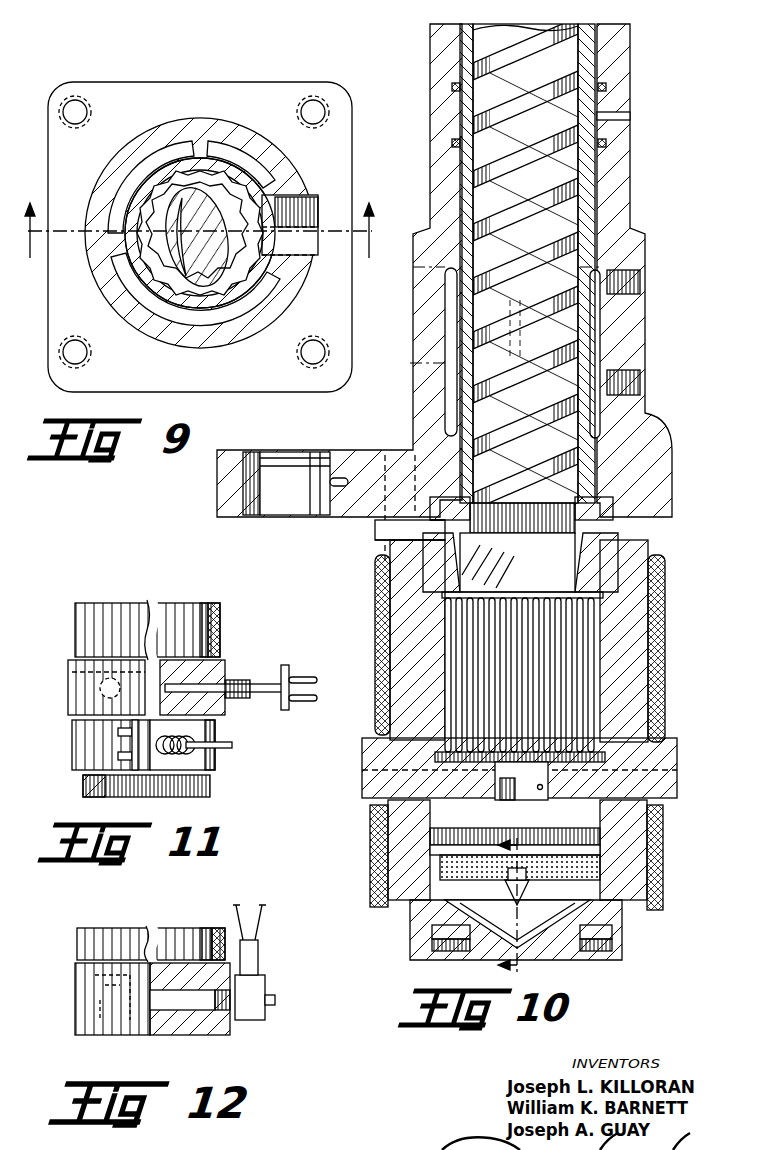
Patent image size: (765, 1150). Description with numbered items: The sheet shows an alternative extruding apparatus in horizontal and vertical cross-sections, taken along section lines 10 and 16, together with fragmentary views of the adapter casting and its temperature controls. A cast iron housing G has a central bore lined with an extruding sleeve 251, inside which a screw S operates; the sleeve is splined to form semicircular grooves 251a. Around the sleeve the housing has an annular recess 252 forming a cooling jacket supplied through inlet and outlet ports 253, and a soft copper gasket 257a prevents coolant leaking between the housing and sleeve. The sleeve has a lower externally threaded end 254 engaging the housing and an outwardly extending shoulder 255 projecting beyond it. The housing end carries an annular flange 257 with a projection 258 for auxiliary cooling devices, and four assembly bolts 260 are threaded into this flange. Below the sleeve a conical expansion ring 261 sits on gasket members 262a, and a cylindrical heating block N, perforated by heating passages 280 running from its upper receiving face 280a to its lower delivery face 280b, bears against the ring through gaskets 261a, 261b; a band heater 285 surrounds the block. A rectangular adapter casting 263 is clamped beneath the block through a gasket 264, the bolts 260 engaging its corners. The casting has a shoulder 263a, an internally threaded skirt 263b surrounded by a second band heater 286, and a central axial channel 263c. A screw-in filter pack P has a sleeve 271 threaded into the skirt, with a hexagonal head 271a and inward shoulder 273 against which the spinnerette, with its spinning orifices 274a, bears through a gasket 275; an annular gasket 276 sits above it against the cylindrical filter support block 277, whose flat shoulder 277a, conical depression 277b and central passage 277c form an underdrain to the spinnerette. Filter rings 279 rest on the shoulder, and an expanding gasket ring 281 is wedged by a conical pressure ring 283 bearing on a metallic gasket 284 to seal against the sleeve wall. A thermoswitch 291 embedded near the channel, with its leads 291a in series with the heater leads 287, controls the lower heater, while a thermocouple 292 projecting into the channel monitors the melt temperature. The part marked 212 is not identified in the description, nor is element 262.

In FIG. 9, the section line 10— 10 is at (202, 243).
In FIG. 10, the section line 16— 16 is at (527, 913).
In FIG. 9, the screw rotor 212 is at (140, 290).
In FIG. 10, the screw rotor 212 is at (522, 158).
In FIG. 10, the extruding sleeve 251 is at (612, 228).
In FIG. 9, the grooves 251a is at (222, 165).
In FIG. 10, the grooves 251a is at (640, 413).
In FIG. 9, the annular recess 252 is at (128, 175).
In FIG. 10, the annular recess 252 is at (440, 368).
In FIG. 10, the inlet and outlet ports 253 is at (640, 285).
In FIG. 10, the lower externally threaded end 254 is at (440, 440).
In FIG. 10, the outwardly extending shoulder 255 is at (610, 525).
In FIG. 10, the annular flange 257 is at (410, 460).
In FIG. 10, the gasket 257a is at (648, 440).
In FIG. 10, the projection 258 is at (240, 455).
In FIG. 9, the assembly bolts 260 is at (76, 106).
In FIG. 10, the assembly bolts 260 is at (385, 552).
In FIG. 10, the conical expansion ring 261 is at (395, 530).
In FIG. 10, the gasket 261a is at (380, 562).
In FIG. 10, the gasket 261b is at (440, 598).
In FIG. 10, the filter head 262 is at (585, 550).
In FIG. 10, the gasket members 262a is at (640, 550).
In FIG. 10, the adapter casting 263 is at (372, 790).
In FIG. 11, the adapter casting 263 is at (72, 695).
In FIG. 12, the adapter casting 263 is at (212, 1035).
In FIG. 10, the shoulder 263a is at (640, 818).
In FIG. 10, the skirt 263b is at (410, 915).
In FIG. 10, the central axial channel 263c is at (372, 812).
In FIG. 11, the central axial channel 263c is at (152, 640).
In FIG. 12, the central axial channel 263c is at (162, 960).
In FIG. 10, the gasket 264 is at (385, 720).
In FIG. 10, the sleeve 271 is at (430, 945).
In FIG. 10, the hexagonal head 271a is at (415, 962).
In FIG. 10, the shoulder 273 is at (580, 955).
In FIG. 10, the spinning orifices 274a is at (448, 958).
In FIG. 10, the gasket 275 is at (610, 952).
In FIG. 10, the annular gasket 276 is at (612, 941).
In FIG. 10, the filter support block 277 is at (540, 955).
In FIG. 10, the annular flat shoulder 277a is at (430, 896).
In FIG. 10, the central conical depression 277b is at (600, 922).
In FIG. 10, the central passage 277c is at (480, 960).
In FIG. 10, the rings 279 is at (600, 872).
In FIG. 10, the heating passages 280 is at (460, 664).
In FIG. 10, the upper receiving face 280a is at (519, 562).
In FIG. 10, the lower delivery face 280b is at (400, 768).
In FIG. 10, the expanding gasket ring 281 is at (430, 880).
In FIG. 10, the conical pressure ring 283 is at (432, 850).
In FIG. 10, the metallic gasket 284 is at (430, 836).
In FIG. 10, the band heater 285 is at (390, 621).
In FIG. 11, the band heater 285 is at (220, 612).
In FIG. 12, the band heater 285 is at (90, 940).
In FIG. 10, the band heater 286 is at (640, 885).
In FIG. 11, the band heater 286 is at (215, 765).
In FIG. 11, the electrical leads 287 is at (200, 745).
In FIG. 11, the thermoswitch 291 is at (95, 682).
In FIG. 12, the thermoswitch 291 is at (250, 1020).
In FIG. 12, the thermoswitch leads 291a is at (237, 905).
In FIG. 11, the thermocouple 292 is at (232, 680).
In FIG. 9, the housing G is at (290, 185).
In FIG. 10, the housing G is at (620, 208).
In FIG. 10, the heating block N is at (410, 645).
In FIG. 11, the heating block N is at (200, 615).
In FIG. 12, the heating block N is at (210, 930).
In FIG. 10, the screw S is at (600, 352).
In FIG. 10, the filter pack P is at (390, 945).